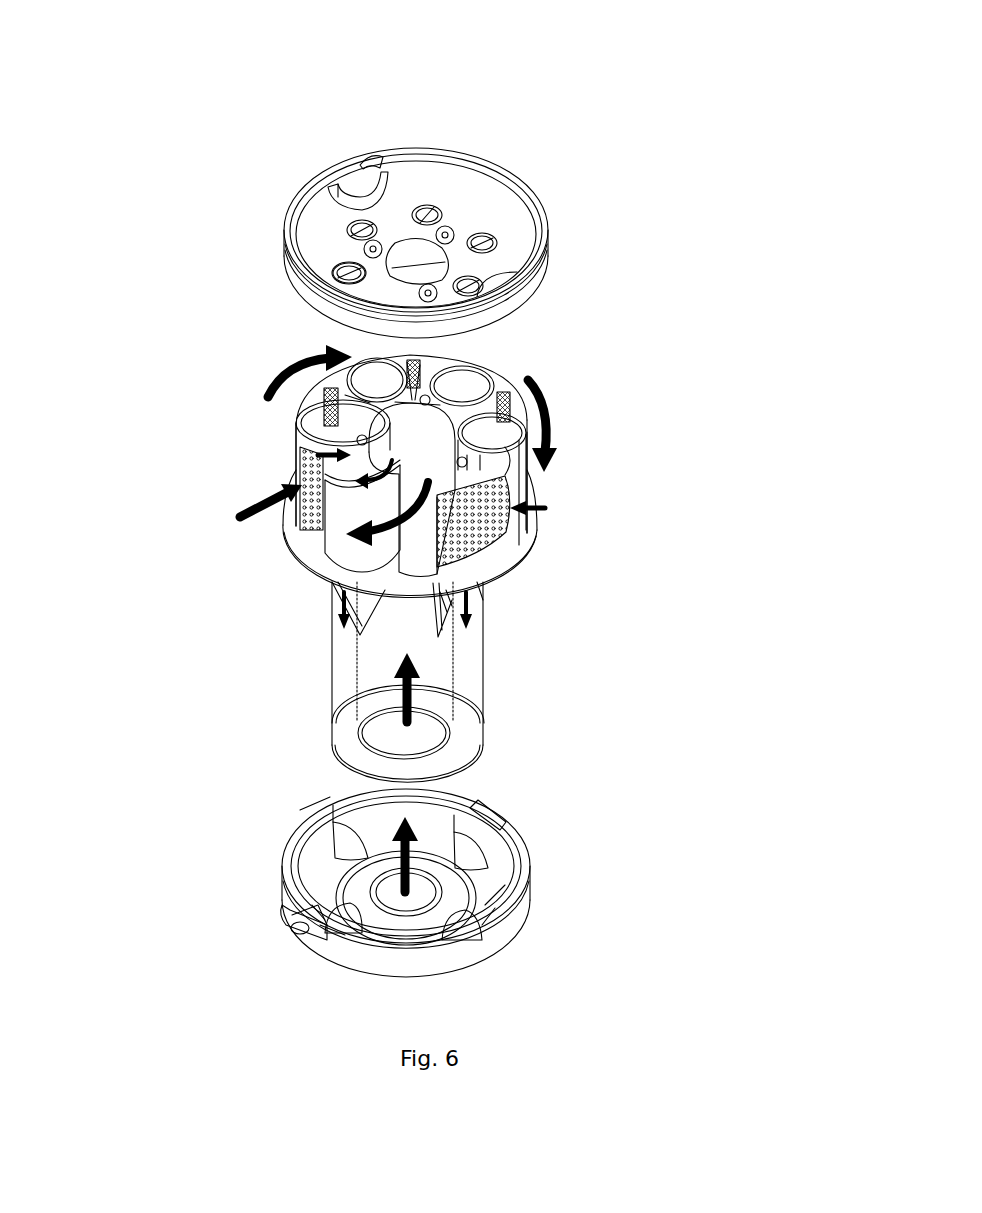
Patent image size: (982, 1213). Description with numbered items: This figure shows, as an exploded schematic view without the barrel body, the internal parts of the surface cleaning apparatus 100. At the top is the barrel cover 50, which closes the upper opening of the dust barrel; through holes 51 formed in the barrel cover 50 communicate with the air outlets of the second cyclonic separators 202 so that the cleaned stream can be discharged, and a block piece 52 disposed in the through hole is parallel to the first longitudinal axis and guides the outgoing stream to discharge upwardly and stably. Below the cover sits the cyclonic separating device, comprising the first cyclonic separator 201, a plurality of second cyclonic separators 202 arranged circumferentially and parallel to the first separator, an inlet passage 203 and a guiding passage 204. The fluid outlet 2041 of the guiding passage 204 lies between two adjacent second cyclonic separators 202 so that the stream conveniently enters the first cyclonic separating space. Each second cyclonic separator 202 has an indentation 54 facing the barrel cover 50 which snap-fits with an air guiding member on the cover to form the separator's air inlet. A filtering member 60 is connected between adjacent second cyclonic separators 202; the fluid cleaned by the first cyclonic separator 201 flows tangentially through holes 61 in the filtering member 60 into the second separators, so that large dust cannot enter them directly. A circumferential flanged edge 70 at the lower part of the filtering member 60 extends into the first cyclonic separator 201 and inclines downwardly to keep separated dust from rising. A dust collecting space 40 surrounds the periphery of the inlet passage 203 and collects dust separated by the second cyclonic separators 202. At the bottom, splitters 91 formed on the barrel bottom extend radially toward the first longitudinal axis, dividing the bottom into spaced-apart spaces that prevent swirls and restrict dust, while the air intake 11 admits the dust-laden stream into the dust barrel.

The surface cleaning apparatus 100 is at (441, 95).
The barrel cover 50 is at (464, 202).
The through holes 51 is at (420, 203).
The block piece 52 is at (333, 263).
The first cyclonic separator 201 is at (305, 418).
The second cyclonic separators 202 is at (473, 383).
The inlet passage 203 is at (372, 655).
The guiding passage 204 is at (330, 446).
The fluid outlet 2041 is at (440, 531).
The indentation 54 is at (540, 477).
The holes 61 is at (515, 483).
The circumferential flanged edge 70 is at (522, 547).
The filtering member 60 is at (490, 567).
The dust collecting space 40 is at (470, 672).
The splitters 91 is at (493, 815).
The air intake 11 is at (420, 893).